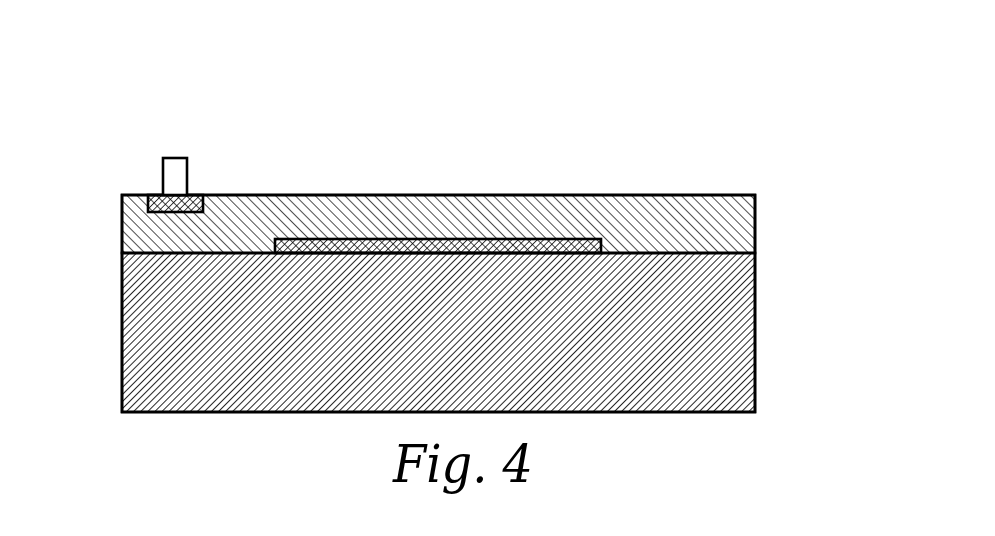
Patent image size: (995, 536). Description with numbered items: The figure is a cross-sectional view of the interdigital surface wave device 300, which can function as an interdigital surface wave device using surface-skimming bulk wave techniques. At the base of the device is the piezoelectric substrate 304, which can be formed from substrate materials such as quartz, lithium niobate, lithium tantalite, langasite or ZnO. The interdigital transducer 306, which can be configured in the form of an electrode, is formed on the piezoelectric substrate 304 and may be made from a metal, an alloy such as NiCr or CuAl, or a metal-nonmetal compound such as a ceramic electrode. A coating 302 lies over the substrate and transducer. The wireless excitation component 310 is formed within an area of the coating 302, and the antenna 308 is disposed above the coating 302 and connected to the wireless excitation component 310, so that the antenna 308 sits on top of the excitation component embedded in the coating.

The interdigital surface wave device 300 is at (79, 71).
The coating 302 is at (122, 230).
The piezoelectric substrate 304 is at (122, 308).
The interdigital transducer 306 is at (423, 238).
The antenna 308 is at (163, 172).
The wireless excitation component 310 is at (195, 195).